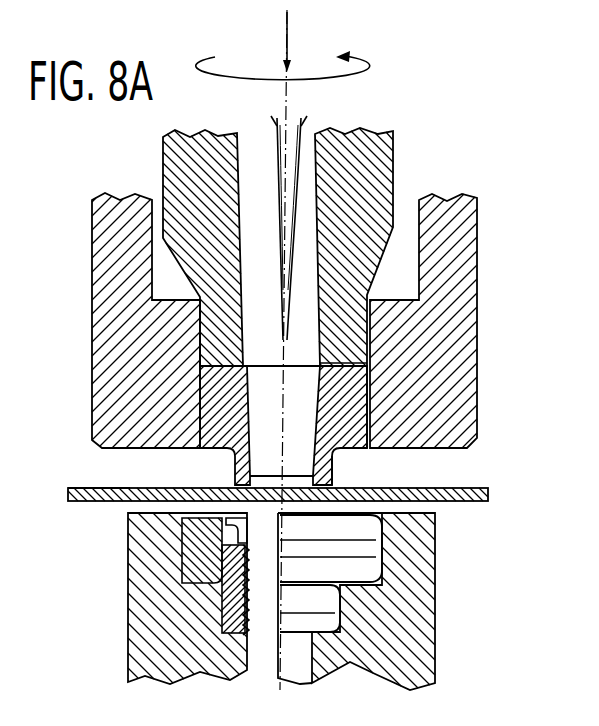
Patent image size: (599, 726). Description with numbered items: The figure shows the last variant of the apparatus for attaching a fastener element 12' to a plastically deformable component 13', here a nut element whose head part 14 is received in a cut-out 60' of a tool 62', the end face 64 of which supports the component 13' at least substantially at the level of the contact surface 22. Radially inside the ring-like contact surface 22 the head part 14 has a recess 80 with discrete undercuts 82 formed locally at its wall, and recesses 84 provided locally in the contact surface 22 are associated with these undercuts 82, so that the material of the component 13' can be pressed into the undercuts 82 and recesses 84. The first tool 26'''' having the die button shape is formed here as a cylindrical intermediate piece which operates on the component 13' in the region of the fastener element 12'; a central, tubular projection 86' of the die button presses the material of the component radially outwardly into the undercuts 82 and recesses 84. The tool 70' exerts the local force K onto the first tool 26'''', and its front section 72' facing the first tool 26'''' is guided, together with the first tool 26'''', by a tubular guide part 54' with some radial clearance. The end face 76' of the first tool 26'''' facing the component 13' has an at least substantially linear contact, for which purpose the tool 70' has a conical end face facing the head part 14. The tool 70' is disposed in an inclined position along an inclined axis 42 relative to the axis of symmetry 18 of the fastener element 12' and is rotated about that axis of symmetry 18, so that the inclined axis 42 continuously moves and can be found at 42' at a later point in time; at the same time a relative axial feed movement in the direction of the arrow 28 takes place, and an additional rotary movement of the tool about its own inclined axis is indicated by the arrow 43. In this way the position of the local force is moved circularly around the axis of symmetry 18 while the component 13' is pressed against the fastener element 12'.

The arrow 28 is at (290, 17).
The arrow 43 is at (350, 56).
The axis of symmetry 18 is at (272, 84).
The inclined axis 42 is at (245, 113).
The inclined axis at a later point in time 42' is at (334, 109).
The tool 70' is at (310, 238).
The tubular guide part 54' is at (316, 320).
The front section 72' is at (119, 332).
The end face 76' is at (202, 422).
The first tool 26'''' is at (459, 407).
The projection 86' is at (368, 470).
The component 13' is at (310, 477).
The end face 64 is at (130, 506).
The contact surface 22 is at (171, 520).
The undercuts 82 is at (161, 549).
The head part 14 is at (183, 583).
The recesses 84 is at (224, 520).
The recess 80 is at (222, 598).
The tool 62' is at (381, 601).
The fastener element 12' is at (288, 553).
The cut-out 60' is at (382, 608).